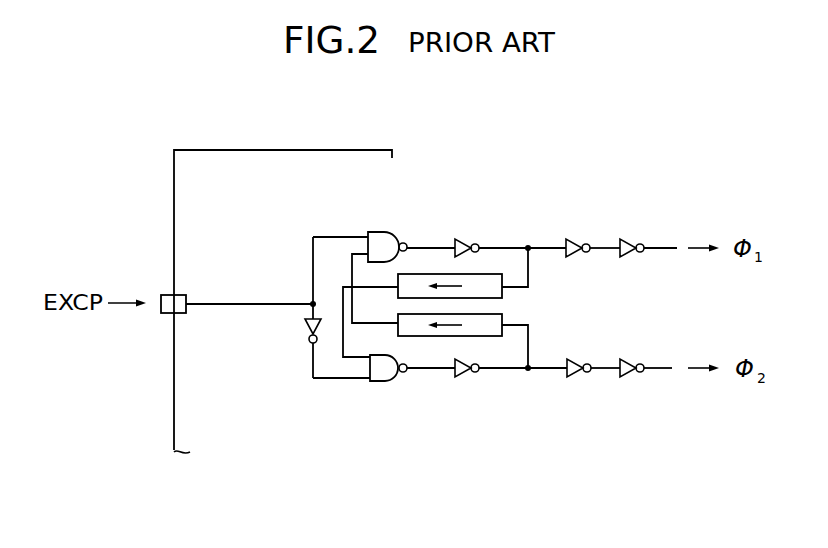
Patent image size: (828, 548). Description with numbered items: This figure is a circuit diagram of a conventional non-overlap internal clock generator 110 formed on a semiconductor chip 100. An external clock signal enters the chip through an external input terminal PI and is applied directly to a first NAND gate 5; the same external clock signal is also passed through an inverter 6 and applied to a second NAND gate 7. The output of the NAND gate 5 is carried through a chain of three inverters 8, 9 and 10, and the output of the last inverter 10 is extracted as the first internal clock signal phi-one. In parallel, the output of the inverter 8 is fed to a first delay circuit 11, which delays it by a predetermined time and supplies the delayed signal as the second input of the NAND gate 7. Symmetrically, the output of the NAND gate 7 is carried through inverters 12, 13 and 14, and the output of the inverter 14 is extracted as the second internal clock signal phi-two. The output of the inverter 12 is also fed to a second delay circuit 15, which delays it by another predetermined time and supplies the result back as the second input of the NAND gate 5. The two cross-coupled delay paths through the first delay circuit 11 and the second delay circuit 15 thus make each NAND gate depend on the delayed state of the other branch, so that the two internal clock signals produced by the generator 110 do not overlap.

The semiconductor chip 100 is at (327, 149).
The external input terminal PI is at (189, 296).
The non-overlap clock generator 110 is at (543, 176).
The NAND gate 5 is at (392, 231).
The inverter 6 is at (303, 331).
The NAND gate 7 is at (385, 382).
The inverter 8 is at (471, 240).
The inverter 9 is at (582, 240).
The inverter 10 is at (636, 240).
The first delay circuit 11 is at (488, 274).
The inverter 12 is at (465, 376).
The inverter 13 is at (575, 376).
The inverter 14 is at (631, 376).
The second delay circuit 15 is at (483, 336).